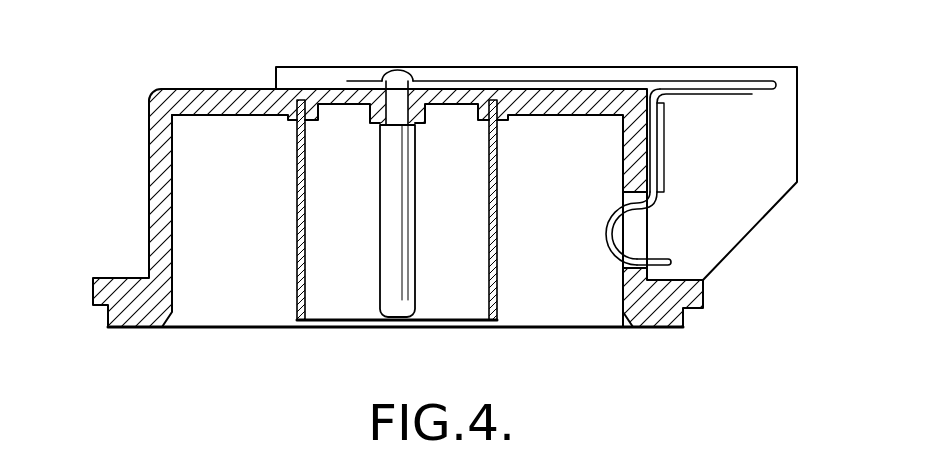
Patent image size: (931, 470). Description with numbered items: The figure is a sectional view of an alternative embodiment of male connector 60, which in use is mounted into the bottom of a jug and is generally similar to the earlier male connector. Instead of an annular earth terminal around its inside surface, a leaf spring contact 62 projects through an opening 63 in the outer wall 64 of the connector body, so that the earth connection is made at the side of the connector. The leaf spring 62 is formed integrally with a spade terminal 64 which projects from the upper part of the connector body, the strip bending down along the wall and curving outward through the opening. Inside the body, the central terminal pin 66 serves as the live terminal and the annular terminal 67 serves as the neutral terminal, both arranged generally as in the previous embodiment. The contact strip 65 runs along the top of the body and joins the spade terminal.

The male connector 60 is at (128, 95).
The leaf spring contact 62 is at (608, 263).
The opening 63 is at (640, 237).
The outer wall 64 is at (648, 167).
The contact strip / plate 65 is at (752, 92).
The central terminal pin 66 is at (397, 297).
The annular terminal 67 is at (298, 290).